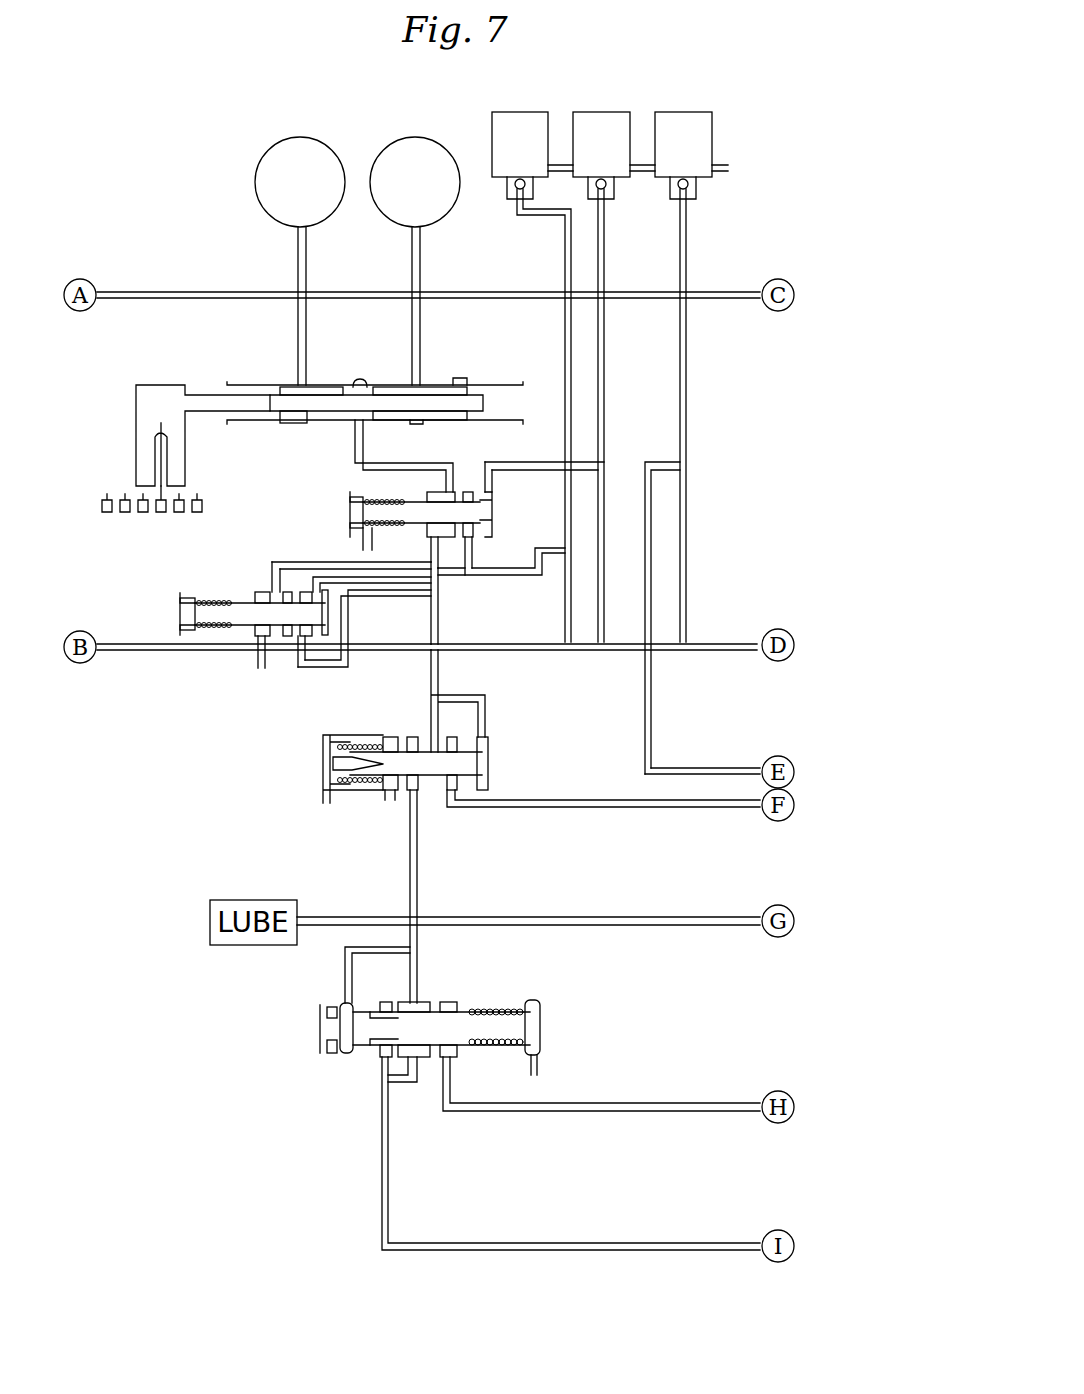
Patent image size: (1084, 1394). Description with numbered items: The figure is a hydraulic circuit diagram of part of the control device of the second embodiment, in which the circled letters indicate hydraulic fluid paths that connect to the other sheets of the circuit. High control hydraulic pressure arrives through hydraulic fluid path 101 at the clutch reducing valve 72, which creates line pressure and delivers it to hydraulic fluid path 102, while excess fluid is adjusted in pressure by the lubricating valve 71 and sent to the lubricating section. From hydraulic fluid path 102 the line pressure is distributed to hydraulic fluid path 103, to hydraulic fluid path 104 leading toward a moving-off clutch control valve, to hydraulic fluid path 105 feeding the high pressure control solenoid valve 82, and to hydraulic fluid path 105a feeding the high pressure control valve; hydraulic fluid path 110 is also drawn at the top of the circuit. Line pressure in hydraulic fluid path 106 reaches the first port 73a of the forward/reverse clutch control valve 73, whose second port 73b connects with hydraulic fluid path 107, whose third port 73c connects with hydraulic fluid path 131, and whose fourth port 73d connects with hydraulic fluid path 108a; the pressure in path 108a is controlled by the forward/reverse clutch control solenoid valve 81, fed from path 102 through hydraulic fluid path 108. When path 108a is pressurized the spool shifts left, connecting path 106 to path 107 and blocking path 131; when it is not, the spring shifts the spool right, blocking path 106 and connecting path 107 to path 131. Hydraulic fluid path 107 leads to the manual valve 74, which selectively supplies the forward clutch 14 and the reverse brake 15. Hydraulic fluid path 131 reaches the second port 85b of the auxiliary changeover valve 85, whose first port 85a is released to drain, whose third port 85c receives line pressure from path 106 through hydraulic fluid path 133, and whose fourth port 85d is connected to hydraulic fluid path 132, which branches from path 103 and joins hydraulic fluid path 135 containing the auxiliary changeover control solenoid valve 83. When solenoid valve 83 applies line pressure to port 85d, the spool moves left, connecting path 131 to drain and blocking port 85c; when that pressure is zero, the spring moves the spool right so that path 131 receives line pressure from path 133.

The forward clutch 14 is at (401, 197).
The reverse brake 15 is at (286, 197).
The lubricating valve 71 is at (462, 1005).
The clutch reducing valve 72 is at (380, 734).
The forward/reverse clutch control valve 73 is at (382, 502).
The first port 73a is at (430, 542).
The second port 73b is at (484, 486).
The third port 73c is at (470, 544).
The fourth port 73d is at (496, 496).
The manual valve 74 is at (314, 385).
The forward/reverse clutch control solenoid valve 81 is at (587, 163).
The high pressure control solenoid valve 82 is at (669, 163).
The auxiliary changeover control solenoid valve 83 is at (506, 163).
The auxiliary changeover valve 85 is at (246, 604).
The first port 85a is at (262, 640).
The second port 85b is at (272, 592).
The third port 85c is at (298, 668).
The fourth port 85d is at (340, 602).
The hydraulic fluid path 101 is at (588, 810).
The hydraulic fluid path 102 is at (438, 668).
The hydraulic fluid path 103 is at (720, 642).
The hydraulic fluid path 104 is at (158, 652).
The hydraulic fluid path 105 is at (686, 439).
The hydraulic fluid path 105a is at (652, 708).
The hydraulic fluid path 106 is at (438, 624).
The hydraulic fluid path 107 is at (381, 466).
The hydraulic fluid path 108 is at (604, 354).
The hydraulic fluid path 108a is at (586, 460).
The oil passage 110 is at (472, 290).
The hydraulic fluid path 131 is at (318, 560).
The hydraulic fluid path 132 is at (456, 575).
The hydraulic fluid path 133 is at (310, 668).
The hydraulic fluid path 135 is at (565, 355).